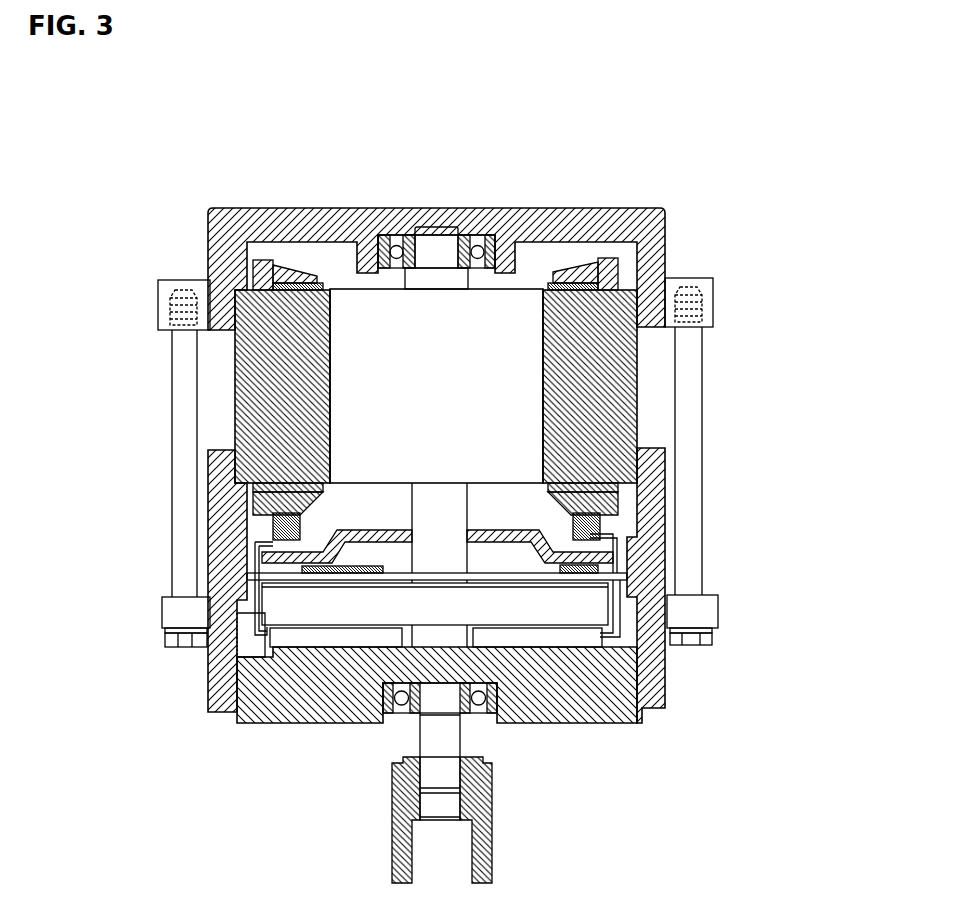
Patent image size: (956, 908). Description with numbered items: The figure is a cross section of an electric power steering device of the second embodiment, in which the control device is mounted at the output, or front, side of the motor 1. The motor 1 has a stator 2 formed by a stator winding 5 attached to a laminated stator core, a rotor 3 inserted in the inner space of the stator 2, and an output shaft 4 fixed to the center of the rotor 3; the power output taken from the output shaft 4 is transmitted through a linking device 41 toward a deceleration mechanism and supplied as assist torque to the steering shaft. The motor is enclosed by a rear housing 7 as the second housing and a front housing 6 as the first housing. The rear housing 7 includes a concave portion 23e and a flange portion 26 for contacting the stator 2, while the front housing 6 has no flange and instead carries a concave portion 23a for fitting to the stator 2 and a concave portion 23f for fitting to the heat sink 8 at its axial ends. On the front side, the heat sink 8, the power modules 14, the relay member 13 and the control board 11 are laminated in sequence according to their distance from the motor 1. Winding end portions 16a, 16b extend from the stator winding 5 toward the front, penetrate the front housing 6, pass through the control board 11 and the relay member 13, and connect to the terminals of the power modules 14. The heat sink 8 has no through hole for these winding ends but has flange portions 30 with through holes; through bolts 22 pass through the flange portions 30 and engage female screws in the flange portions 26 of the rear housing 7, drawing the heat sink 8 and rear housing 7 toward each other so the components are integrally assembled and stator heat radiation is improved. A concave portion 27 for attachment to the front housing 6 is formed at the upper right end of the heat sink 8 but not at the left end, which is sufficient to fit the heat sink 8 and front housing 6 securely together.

The motor 1 is at (447, 505).
The stator 2 is at (235, 355).
The rotor 3 is at (347, 340).
The output shaft 4 is at (437, 732).
The stator winding 5 is at (285, 276).
The front housing 6 is at (623, 555).
The rear housing 7 is at (663, 210).
The heat sink 8 is at (648, 708).
The control board 11 is at (633, 570).
The relay member 13 is at (277, 642).
The power module 14 is at (255, 652).
The winding end portion 16a is at (253, 602).
The winding end portion 16b is at (613, 537).
The through bolt 22 is at (710, 642).
The concave portion 23a is at (250, 486).
The concave portion 23e is at (237, 290).
The concave portion 23f is at (228, 612).
The flange portion 26 is at (708, 290).
The concave portion 27 is at (687, 640).
The flange portion 30 is at (712, 612).
The linking device 41 is at (392, 777).